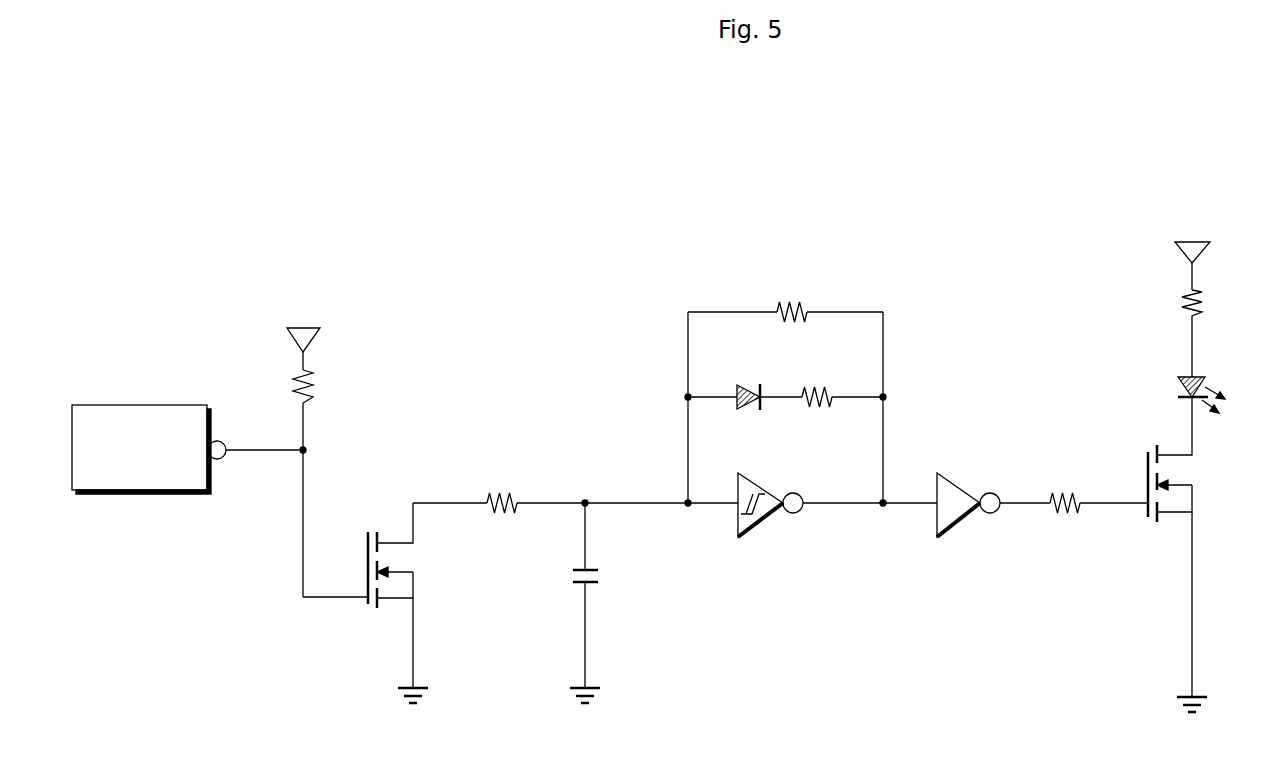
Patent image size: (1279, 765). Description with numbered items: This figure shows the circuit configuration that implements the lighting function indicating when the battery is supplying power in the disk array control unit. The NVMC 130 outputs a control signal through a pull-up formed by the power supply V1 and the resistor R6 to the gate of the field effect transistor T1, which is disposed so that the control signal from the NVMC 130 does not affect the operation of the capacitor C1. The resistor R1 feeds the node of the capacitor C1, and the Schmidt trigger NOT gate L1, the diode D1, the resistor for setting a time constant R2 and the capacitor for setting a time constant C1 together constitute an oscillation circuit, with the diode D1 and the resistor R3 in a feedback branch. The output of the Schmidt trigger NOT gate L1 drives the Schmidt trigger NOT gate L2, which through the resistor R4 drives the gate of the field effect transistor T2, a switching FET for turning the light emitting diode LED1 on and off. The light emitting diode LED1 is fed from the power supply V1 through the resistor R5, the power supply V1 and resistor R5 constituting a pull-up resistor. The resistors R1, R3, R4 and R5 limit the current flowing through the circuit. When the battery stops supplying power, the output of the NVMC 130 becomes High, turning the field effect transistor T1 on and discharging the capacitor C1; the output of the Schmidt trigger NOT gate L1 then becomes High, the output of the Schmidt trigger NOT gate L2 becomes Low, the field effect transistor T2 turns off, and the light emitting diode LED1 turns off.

The NVMC 130 is at (150, 405).
The power supply V1 is at (317, 338).
The resistor R6 is at (314, 392).
The field effect transistor T1 is at (370, 525).
The resistor R1 is at (510, 490).
The capacitor for setting a time constant C1 is at (573, 578).
The resistor for setting a time constant R2 is at (792, 303).
The diode D1 is at (735, 390).
The resistor R3 is at (830, 390).
The Schmidt trigger NOT gate L1 is at (760, 486).
The Schmidt trigger NOT gate L2 is at (958, 486).
The resistor R4 is at (1062, 492).
The field effect transistor T2 is at (1195, 490).
The light emitting diode LED1 is at (1178, 388).
The resistor R5 is at (1185, 305).